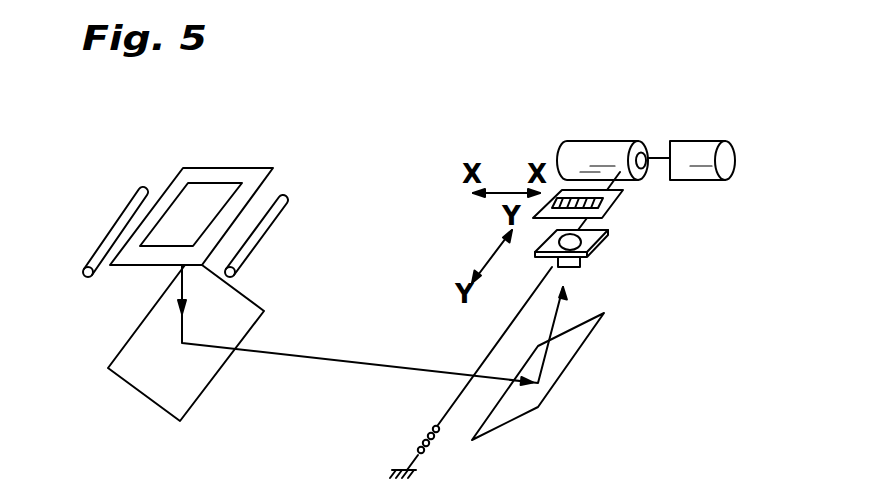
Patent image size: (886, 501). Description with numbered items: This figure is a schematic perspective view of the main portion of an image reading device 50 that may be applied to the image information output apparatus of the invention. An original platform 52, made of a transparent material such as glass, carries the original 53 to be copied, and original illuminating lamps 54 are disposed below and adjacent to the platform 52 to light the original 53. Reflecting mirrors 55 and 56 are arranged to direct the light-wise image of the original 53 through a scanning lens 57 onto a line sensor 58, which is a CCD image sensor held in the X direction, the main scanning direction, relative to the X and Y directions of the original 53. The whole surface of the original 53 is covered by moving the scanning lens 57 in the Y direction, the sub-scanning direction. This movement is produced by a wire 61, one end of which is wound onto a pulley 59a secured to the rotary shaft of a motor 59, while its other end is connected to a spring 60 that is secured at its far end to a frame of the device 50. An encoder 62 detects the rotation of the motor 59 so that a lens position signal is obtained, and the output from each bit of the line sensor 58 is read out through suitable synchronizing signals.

The image reading device 50 is at (636, 302).
The original platform 52 is at (240, 173).
The original 53 is at (178, 205).
The original illuminating lamps 54 is at (112, 238).
The reflecting mirror 55 is at (138, 377).
The reflecting mirror 56 is at (548, 398).
The scanning lens 57 is at (575, 242).
The line sensor 58 is at (603, 203).
The motor 59 is at (592, 150).
The pulley 59a is at (642, 153).
The spring 60 is at (432, 440).
The wire 61 is at (452, 405).
The encoder 62 is at (710, 182).